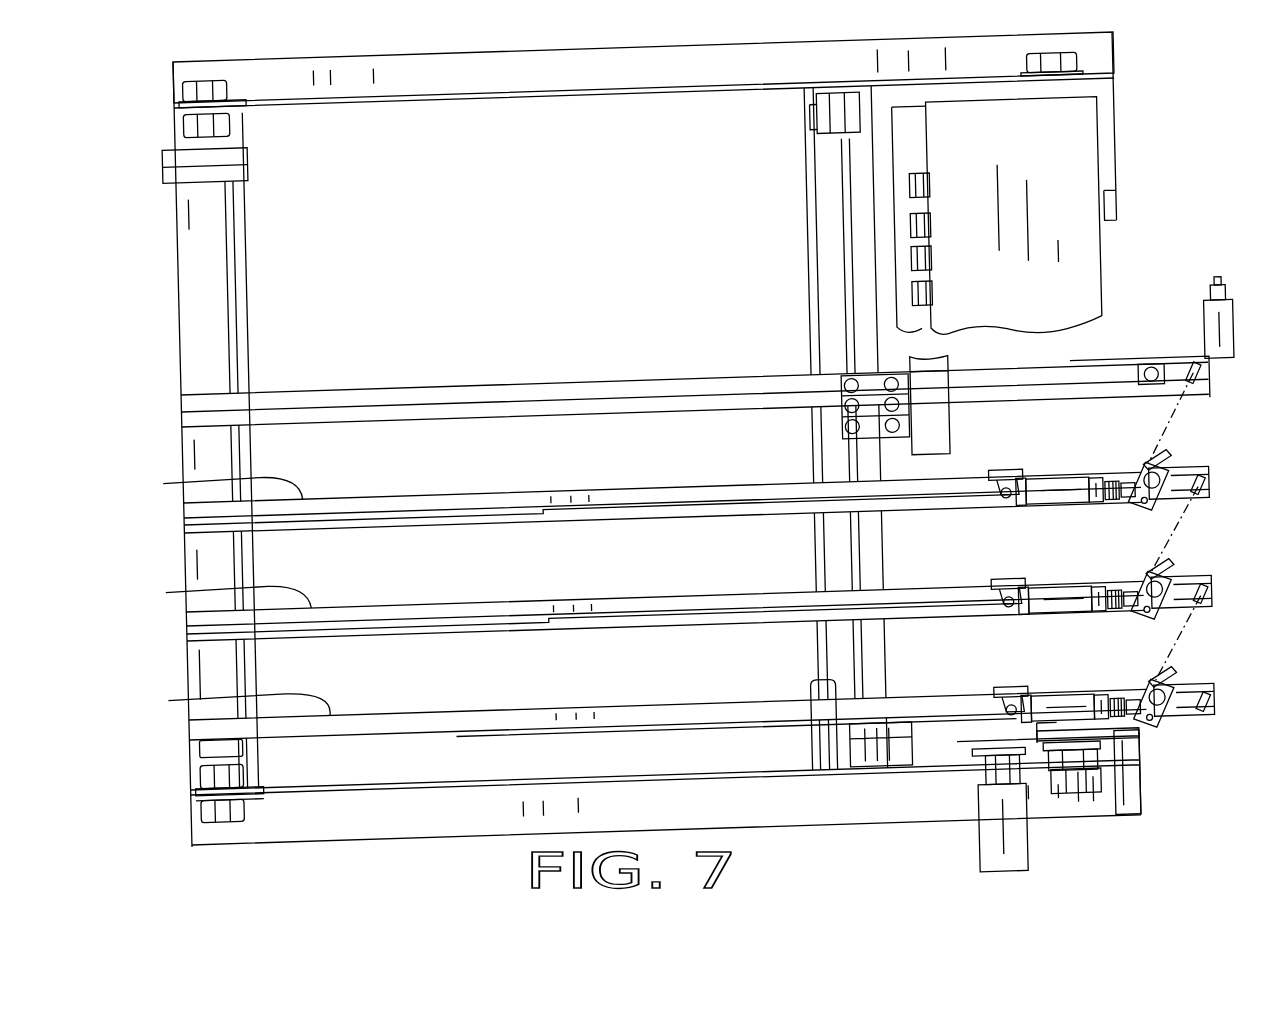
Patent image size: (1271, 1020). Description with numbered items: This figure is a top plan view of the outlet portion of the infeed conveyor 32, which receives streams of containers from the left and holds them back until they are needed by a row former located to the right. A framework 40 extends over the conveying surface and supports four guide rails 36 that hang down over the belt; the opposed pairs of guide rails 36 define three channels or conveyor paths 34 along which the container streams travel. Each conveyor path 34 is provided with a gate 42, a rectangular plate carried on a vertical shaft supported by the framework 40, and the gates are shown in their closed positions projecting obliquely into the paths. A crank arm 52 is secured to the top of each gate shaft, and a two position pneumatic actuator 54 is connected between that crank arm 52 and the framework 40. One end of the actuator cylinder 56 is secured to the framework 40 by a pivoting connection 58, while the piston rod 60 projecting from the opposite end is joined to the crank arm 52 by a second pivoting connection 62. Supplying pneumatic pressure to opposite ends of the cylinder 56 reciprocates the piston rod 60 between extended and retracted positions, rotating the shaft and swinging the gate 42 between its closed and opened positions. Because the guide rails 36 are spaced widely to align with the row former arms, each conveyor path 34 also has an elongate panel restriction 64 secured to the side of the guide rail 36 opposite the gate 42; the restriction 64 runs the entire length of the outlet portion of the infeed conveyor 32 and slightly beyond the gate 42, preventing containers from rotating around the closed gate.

The infeed conveyor 32 is at (152, 354).
The conveyor path 34 is at (600, 459).
The guide rail 36 is at (350, 412).
The framework 40 is at (468, 76).
The gate 42 is at (1168, 460).
The crank arm 52 is at (1144, 504).
The pneumatic actuator 54 is at (1005, 515).
The cylinder 56 is at (1045, 485).
The pivoting connection 58 is at (1001, 470).
The piston rod 60 is at (1116, 500).
The pivoting connection 62 is at (1135, 506).
The restriction 64 is at (780, 397).